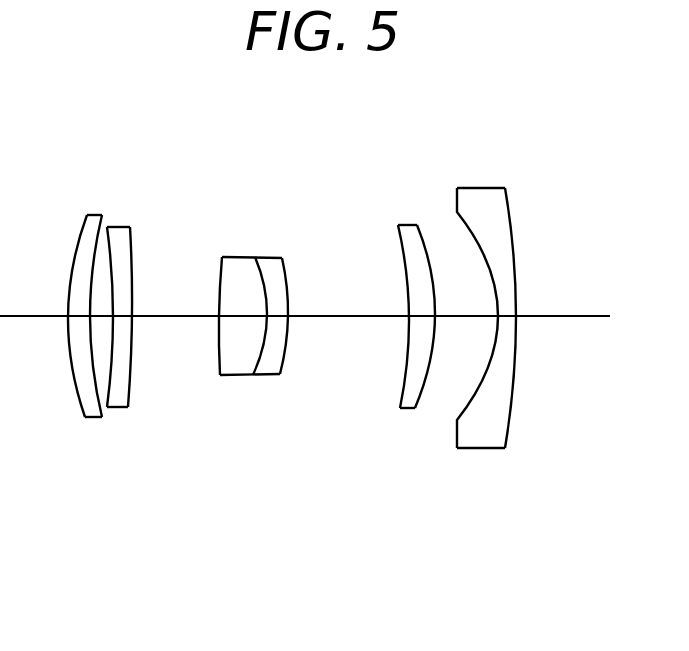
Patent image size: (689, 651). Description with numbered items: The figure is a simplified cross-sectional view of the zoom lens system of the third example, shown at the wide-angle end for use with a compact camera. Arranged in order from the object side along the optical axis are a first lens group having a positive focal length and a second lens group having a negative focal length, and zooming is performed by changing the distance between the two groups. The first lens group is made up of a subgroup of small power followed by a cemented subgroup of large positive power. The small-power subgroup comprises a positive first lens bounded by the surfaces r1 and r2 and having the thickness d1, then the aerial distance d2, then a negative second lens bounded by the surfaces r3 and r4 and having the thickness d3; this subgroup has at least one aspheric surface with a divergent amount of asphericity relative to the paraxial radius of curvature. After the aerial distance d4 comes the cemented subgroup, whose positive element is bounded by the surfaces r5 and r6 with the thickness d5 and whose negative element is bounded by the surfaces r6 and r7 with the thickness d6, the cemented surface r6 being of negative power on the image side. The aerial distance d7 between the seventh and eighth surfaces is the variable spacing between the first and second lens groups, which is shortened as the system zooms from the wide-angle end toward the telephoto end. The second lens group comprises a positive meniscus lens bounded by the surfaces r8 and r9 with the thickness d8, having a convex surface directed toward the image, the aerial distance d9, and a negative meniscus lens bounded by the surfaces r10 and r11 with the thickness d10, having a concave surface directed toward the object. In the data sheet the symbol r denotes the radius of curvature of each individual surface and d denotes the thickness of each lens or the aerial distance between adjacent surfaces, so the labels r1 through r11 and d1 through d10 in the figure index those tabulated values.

The radius of curvature of first lens surface r1 is at (87, 215).
The radius of curvature of second lens surface r2 is at (102, 215).
The radius of curvature of third lens surface r3 is at (108, 227).
The radius of curvature of fourth lens surface r4 is at (130, 227).
The radius of curvature of fifth lens surface r5 is at (222, 257).
The radius of curvature of sixth lens surface r6 is at (255, 257).
The radius of curvature of seventh lens surface r7 is at (282, 258).
The radius of curvature of eighth lens surface r8 is at (398, 225).
The radius of curvature of ninth lens surface r9 is at (417, 225).
The radius of curvature of tenth lens surface r10 is at (457, 188).
The radius of curvature of eleventh lens surface r11 is at (505, 188).
The thickness of first lens d1 is at (80, 316).
The aerial distance between second and third surfaces d2 is at (102, 316).
The thickness of second lens d3 is at (120, 316).
The aerial distance between fourth and fifth surfaces d4 is at (185, 316).
The thickness of positive cemented element d5 is at (238, 316).
The thickness of negative cemented element d6 is at (275, 316).
The aerial distance between first and second lens groups d7 is at (340, 316).
The thickness of positive meniscus lens d8 is at (419, 316).
The aerial distance between ninth and tenth surfaces d9 is at (453, 316).
The thickness of negative meniscus lens d10 is at (507, 316).